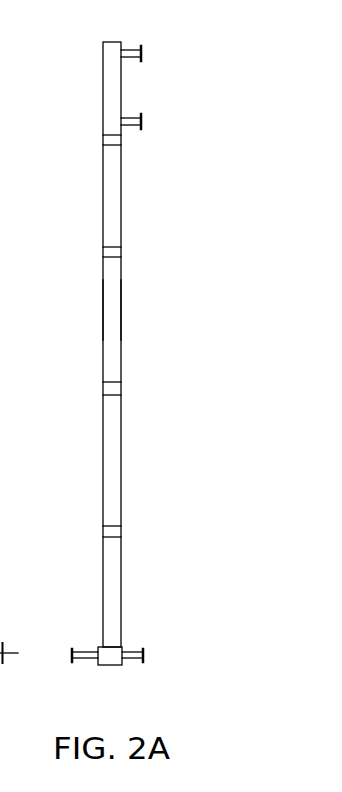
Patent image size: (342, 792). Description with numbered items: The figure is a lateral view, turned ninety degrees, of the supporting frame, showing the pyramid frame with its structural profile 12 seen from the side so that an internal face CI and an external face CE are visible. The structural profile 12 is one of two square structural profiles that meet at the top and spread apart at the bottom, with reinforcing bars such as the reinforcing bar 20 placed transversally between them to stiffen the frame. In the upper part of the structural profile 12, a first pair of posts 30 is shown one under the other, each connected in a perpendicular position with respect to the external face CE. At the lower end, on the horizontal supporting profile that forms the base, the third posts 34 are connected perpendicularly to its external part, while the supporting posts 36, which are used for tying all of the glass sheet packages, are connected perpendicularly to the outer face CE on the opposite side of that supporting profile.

The square structural profile 12 is at (109, 444).
The first pair of posts 30 is at (152, 56).
The third posts 34 is at (136, 646).
The supporting posts 36 is at (80, 646).
The internal face CI is at (130, 309).
The external face CE is at (98, 310).
The reinforcing bar 20 is at (9, 681).